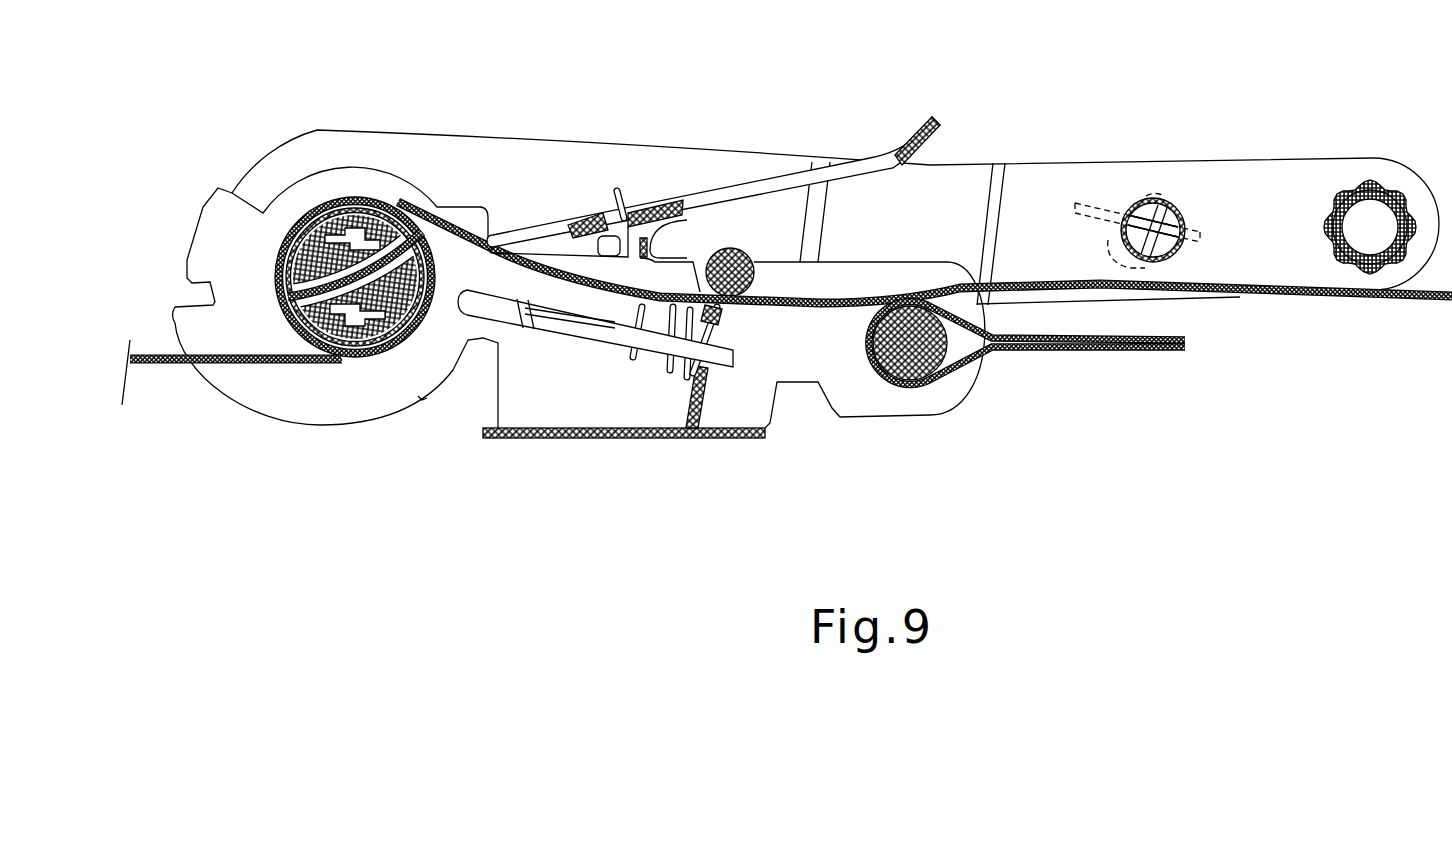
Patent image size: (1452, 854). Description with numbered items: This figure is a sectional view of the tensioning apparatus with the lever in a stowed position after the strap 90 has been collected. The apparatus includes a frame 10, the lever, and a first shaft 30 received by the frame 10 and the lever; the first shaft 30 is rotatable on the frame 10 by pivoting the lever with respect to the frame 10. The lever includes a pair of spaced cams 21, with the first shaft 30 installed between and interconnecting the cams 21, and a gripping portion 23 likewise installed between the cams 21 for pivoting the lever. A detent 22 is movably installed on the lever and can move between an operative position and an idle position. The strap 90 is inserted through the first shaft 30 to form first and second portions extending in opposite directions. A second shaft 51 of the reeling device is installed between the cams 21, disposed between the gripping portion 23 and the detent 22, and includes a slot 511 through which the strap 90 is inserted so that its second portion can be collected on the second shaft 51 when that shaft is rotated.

The frame 10 is at (890, 402).
The cam 21 is at (1250, 207).
The detent 22 is at (862, 173).
The gripping portion 23 is at (1370, 180).
The first shaft 30 is at (350, 230).
The second shaft 51 is at (1133, 207).
The slot 511 is at (1148, 195).
The strap 90 is at (178, 362).